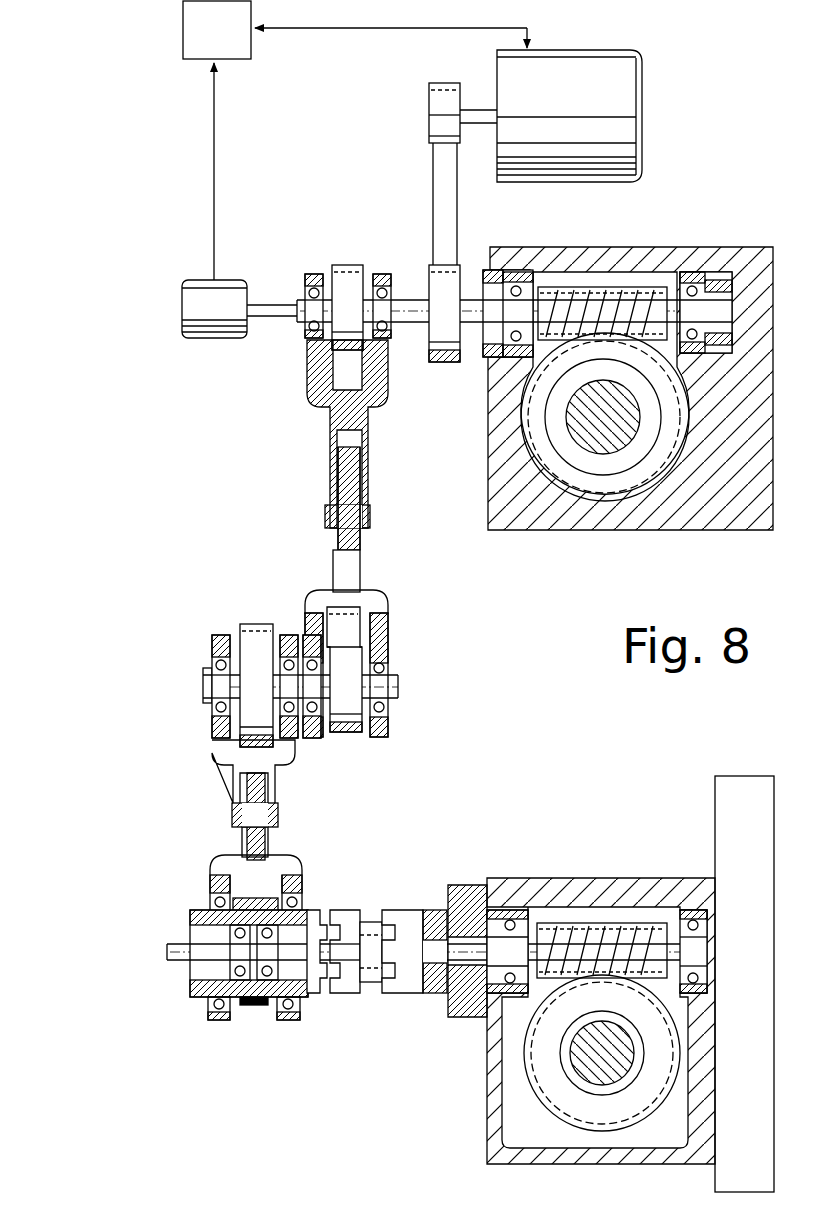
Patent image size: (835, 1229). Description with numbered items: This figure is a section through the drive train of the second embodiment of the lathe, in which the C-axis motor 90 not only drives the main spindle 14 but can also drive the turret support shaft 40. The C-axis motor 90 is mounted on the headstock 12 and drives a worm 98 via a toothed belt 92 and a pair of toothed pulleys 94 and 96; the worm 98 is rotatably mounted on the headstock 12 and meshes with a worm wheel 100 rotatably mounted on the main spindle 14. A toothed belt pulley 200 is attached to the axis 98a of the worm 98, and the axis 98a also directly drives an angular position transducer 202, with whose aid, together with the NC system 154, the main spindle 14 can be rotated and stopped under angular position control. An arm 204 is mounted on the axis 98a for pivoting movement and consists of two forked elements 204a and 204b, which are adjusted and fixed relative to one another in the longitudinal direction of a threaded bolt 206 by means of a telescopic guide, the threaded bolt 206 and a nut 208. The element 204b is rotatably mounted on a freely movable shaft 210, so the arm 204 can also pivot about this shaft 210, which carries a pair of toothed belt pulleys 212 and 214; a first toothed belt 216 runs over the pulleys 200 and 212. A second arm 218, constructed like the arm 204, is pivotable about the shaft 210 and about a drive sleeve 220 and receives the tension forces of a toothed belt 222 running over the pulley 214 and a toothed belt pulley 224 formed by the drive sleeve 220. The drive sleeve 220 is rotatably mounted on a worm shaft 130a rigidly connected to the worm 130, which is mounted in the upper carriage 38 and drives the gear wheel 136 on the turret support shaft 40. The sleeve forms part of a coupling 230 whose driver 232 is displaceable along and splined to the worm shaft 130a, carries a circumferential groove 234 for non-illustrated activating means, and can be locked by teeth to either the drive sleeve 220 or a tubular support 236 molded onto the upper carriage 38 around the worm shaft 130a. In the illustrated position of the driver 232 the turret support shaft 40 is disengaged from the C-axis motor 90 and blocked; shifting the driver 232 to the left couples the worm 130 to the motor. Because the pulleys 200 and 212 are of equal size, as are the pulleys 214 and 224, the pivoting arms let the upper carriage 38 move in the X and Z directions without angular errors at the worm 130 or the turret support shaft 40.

The headstock 12 is at (720, 260).
The main spindle 14 is at (577, 403).
The upper carriage 38 is at (537, 880).
The turret support shaft 40 is at (580, 1045).
The C-axis motor 90 is at (613, 98).
The toothed belt 92 is at (433, 178).
The toothed pulley 94 is at (428, 104).
The toothed pulley 96 is at (440, 283).
The worm 98 is at (606, 305).
The axis of the worm 98a is at (483, 290).
The worm wheel 100 is at (587, 477).
The worm 130 is at (583, 933).
The worm shaft 130a is at (170, 947).
The gear wheel 136 is at (550, 1082).
The NC system 154 is at (190, 43).
The toothed belt pulley 200 is at (342, 283).
The angular position transducer 202 is at (203, 318).
The arm 204 is at (323, 543).
The forked element 204a is at (320, 417).
The forked element 204b is at (347, 590).
The threaded bolt 206 is at (338, 472).
The nut 208 is at (372, 518).
The shaft 210 is at (383, 682).
The toothed belt pulley 212 is at (347, 703).
The toothed belt pulley 214 is at (252, 657).
The first toothed belt 216 is at (343, 627).
The second arm 218 is at (225, 814).
The drive sleeve 220 is at (193, 995).
The toothed belt 222 is at (253, 880).
The toothed belt pulley 224 is at (240, 1010).
The coupling 230 is at (376, 977).
The driver 232 is at (350, 917).
The circumferential groove 234 is at (370, 917).
The tubular support 236 is at (417, 990).